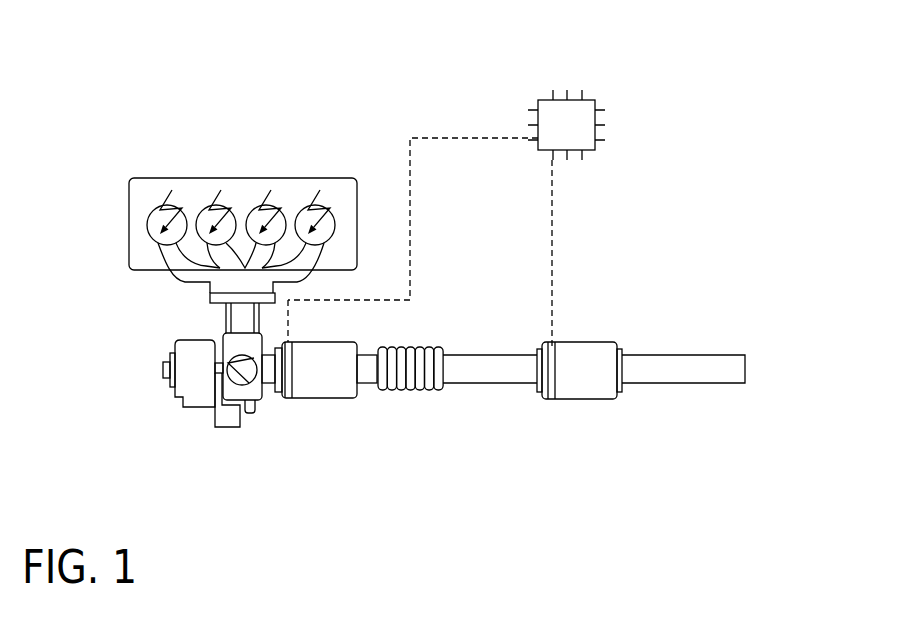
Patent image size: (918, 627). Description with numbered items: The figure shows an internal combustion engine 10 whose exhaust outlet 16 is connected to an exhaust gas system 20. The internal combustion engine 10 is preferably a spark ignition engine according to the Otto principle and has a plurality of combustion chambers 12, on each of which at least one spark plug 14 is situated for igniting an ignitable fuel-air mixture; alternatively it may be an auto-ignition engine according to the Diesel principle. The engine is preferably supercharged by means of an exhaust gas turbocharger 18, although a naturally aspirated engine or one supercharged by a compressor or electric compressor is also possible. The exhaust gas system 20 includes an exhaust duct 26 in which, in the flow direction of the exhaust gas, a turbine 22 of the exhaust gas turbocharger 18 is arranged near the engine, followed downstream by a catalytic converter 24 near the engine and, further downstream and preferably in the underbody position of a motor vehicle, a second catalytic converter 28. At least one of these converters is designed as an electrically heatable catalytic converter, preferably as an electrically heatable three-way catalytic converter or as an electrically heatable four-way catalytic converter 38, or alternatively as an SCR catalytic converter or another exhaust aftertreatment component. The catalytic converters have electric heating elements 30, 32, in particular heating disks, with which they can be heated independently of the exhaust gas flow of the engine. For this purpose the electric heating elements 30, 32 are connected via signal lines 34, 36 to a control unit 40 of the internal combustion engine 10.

The internal combustion engine 10 is at (210, 223).
The combustion chamber 12 is at (147, 228).
The spark plug 14 is at (217, 197).
The exhaust outlet 16 is at (235, 284).
The exhaust gas turbocharger 18 is at (229, 424).
The exhaust gas system 20 is at (510, 363).
The turbine 22 is at (248, 382).
The catalytic converter 24 is at (330, 398).
The exhaust duct 26 is at (488, 383).
The second catalytic converter 28 is at (641, 408).
The electrically heatable four-way catalytic converter 38 is at (581, 399).
The electric heating element 30 is at (290, 353).
The electric heating element 32 is at (552, 352).
The signal line 34 is at (447, 138).
The signal line 36 is at (552, 233).
The control unit 40 is at (593, 100).